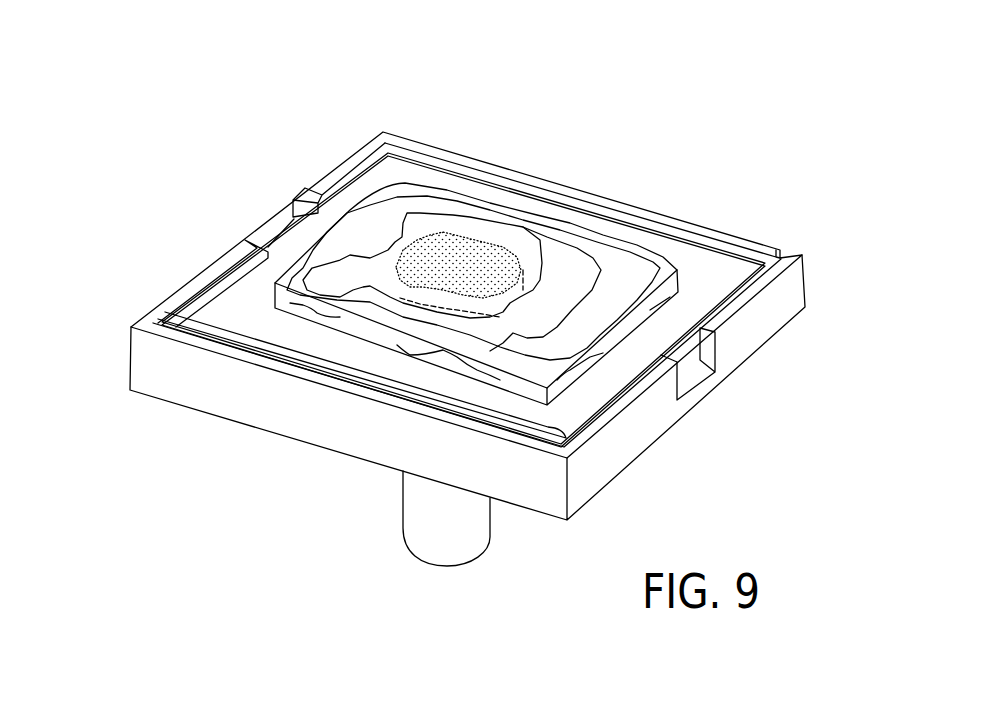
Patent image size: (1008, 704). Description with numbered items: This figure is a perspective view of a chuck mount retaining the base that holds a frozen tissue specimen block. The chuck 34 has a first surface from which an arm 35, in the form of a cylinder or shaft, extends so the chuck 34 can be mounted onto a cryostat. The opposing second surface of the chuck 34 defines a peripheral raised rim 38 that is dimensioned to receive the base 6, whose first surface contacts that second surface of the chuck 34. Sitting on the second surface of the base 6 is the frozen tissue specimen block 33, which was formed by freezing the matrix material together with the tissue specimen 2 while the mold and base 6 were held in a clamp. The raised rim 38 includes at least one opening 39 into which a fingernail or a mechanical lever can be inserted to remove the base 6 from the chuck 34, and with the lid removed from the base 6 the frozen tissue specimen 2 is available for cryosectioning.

The tissue specimen 2 is at (470, 256).
The base 6 is at (696, 268).
The frozen tissue specimen block 33 is at (380, 216).
The chuck 34 is at (173, 395).
The arm 35 is at (424, 539).
The peripheral raised rim 38 is at (796, 256).
The opening 39 is at (703, 381).